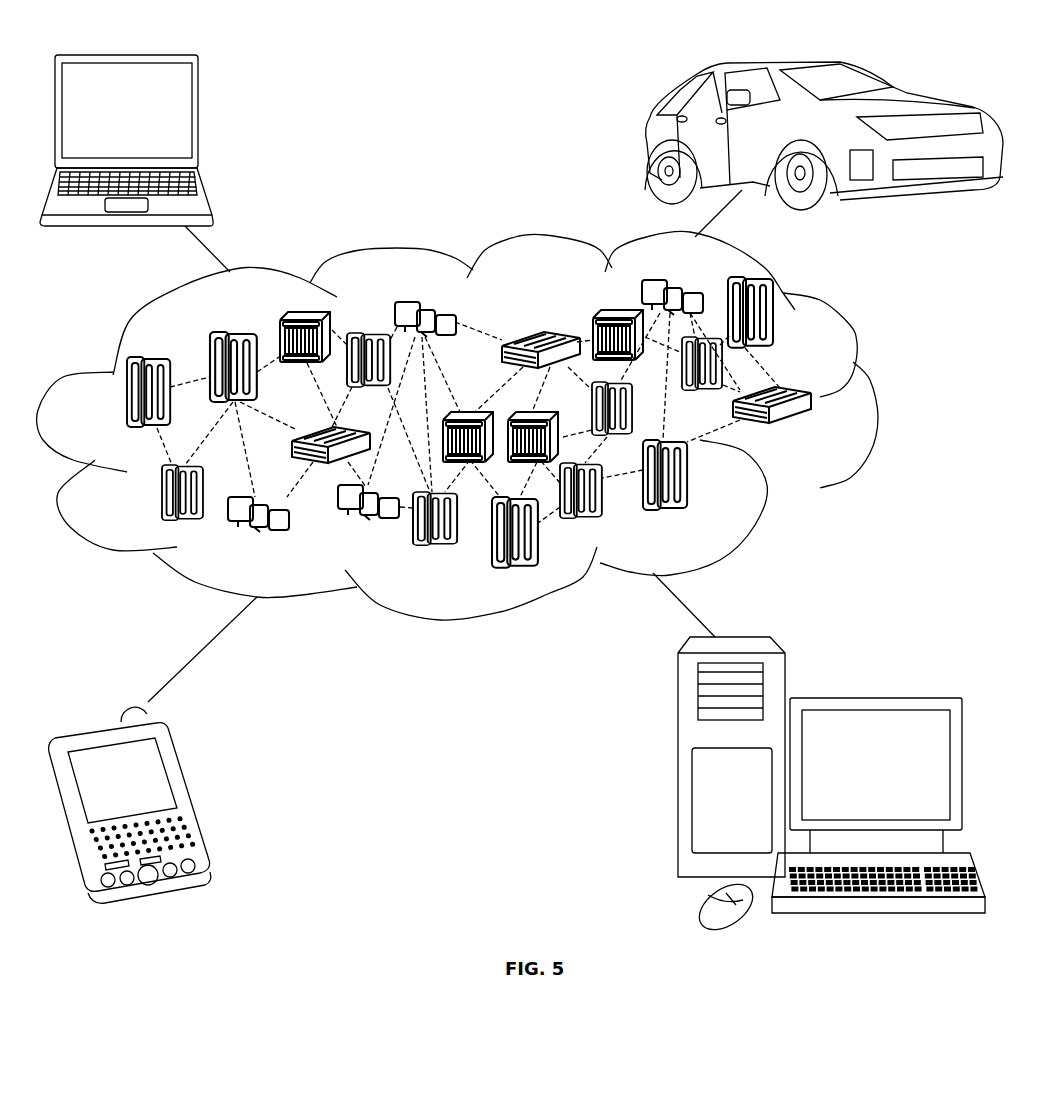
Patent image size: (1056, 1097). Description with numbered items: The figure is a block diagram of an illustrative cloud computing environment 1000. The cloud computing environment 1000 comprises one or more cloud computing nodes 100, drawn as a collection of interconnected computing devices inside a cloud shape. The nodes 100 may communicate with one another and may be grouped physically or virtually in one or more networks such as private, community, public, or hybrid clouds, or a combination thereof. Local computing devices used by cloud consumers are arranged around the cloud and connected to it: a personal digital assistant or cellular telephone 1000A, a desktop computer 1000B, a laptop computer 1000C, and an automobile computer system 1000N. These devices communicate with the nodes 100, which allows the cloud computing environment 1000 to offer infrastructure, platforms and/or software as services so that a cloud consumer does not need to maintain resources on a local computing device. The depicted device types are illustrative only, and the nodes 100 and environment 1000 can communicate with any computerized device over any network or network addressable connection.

The cloud computing nodes 100 is at (829, 434).
The cloud computing environment 1000 is at (877, 402).
The personal digital assistant (PDA) or cellular telephone 1000A is at (190, 800).
The desktop computer 1000B is at (871, 699).
The laptop computer 1000C is at (205, 121).
The automobile computer system 1000N is at (648, 135).